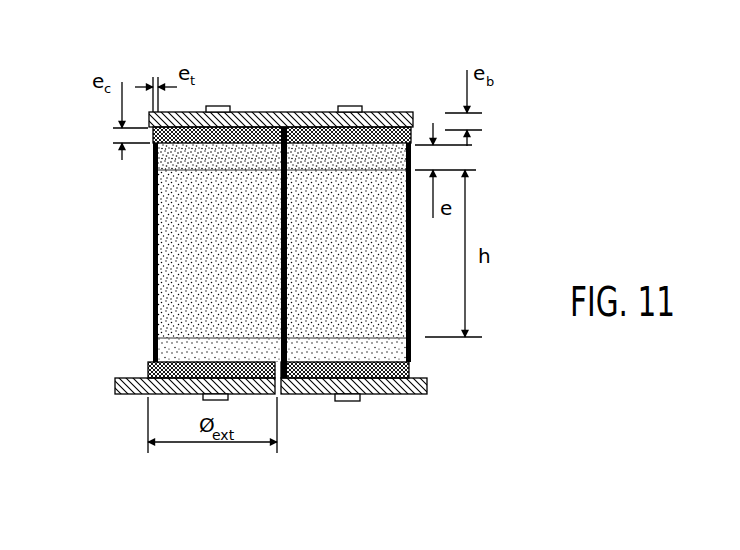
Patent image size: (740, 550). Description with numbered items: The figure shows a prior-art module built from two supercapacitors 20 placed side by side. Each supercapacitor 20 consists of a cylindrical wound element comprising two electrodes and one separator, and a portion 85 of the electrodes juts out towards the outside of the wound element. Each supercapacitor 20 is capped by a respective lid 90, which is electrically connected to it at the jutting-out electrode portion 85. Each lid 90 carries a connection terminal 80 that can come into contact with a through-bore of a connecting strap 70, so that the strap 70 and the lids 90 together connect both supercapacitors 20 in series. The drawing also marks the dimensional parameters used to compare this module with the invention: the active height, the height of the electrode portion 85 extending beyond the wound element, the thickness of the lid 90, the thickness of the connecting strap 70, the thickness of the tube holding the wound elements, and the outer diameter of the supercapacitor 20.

The supercapacitor 20 is at (262, 299).
The connecting strap 70 is at (285, 112).
The connection terminal 80 is at (218, 108).
The electrode portion 85 is at (154, 173).
The lid 90 is at (155, 146).